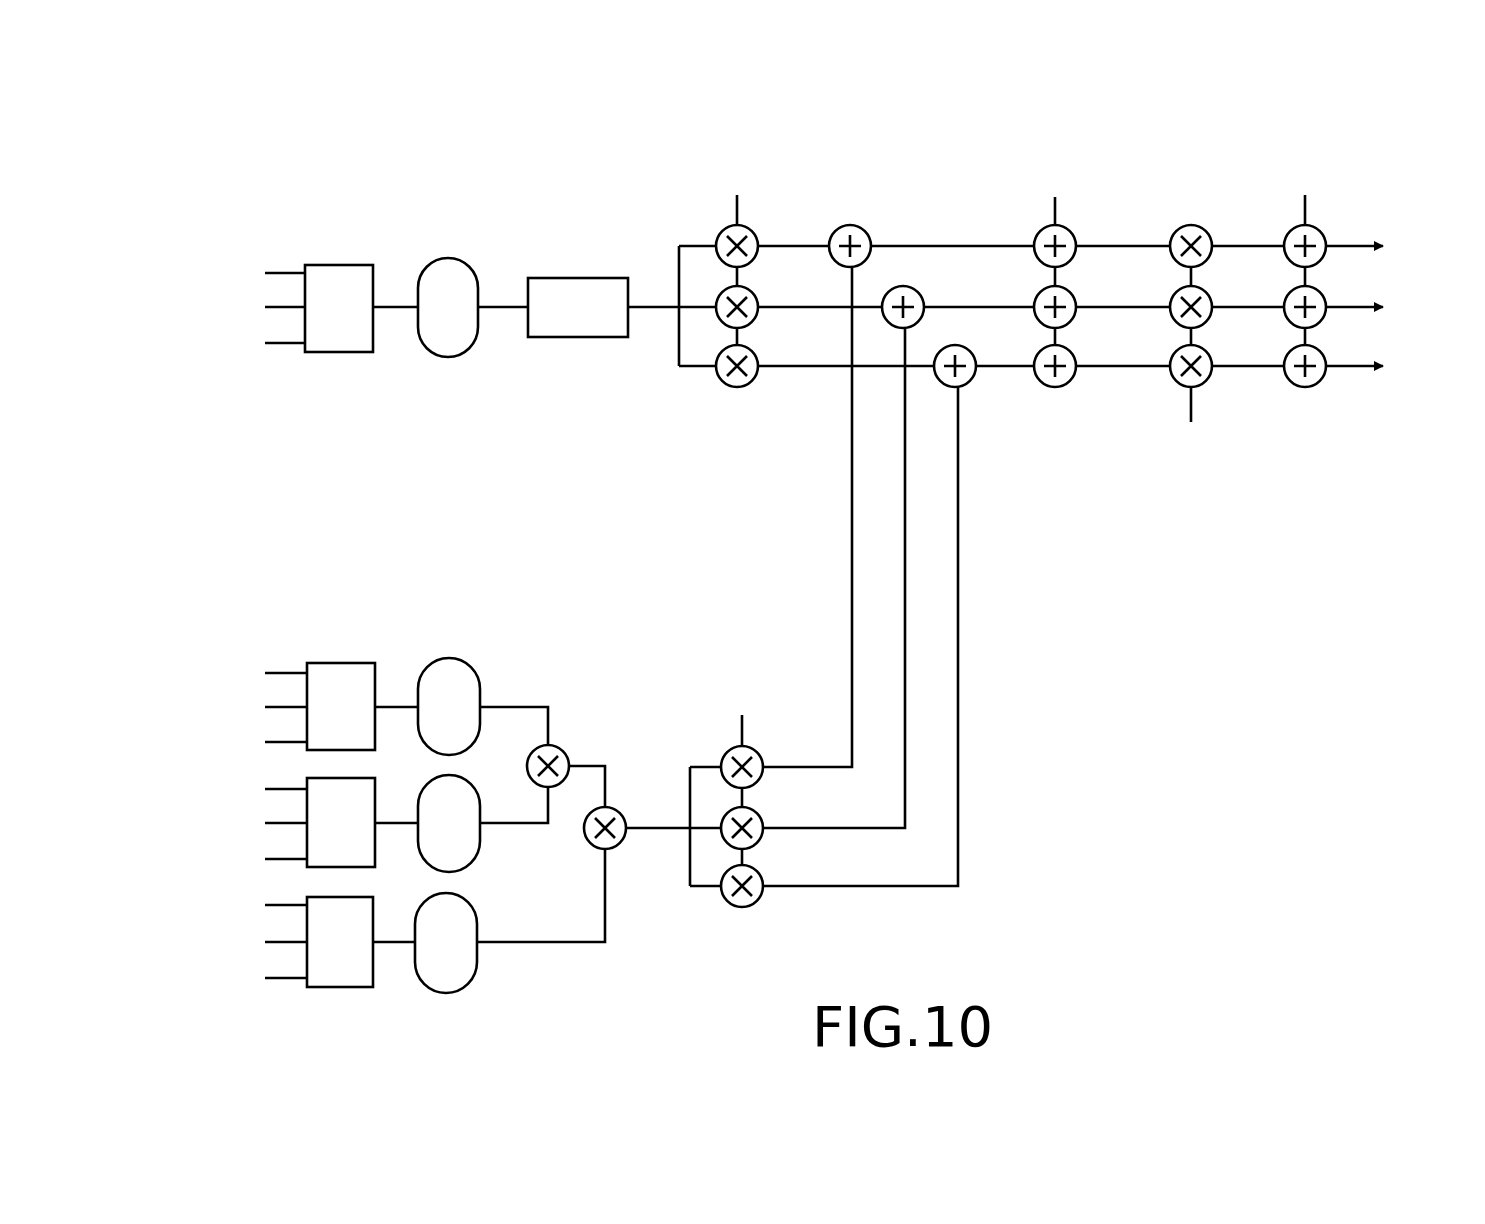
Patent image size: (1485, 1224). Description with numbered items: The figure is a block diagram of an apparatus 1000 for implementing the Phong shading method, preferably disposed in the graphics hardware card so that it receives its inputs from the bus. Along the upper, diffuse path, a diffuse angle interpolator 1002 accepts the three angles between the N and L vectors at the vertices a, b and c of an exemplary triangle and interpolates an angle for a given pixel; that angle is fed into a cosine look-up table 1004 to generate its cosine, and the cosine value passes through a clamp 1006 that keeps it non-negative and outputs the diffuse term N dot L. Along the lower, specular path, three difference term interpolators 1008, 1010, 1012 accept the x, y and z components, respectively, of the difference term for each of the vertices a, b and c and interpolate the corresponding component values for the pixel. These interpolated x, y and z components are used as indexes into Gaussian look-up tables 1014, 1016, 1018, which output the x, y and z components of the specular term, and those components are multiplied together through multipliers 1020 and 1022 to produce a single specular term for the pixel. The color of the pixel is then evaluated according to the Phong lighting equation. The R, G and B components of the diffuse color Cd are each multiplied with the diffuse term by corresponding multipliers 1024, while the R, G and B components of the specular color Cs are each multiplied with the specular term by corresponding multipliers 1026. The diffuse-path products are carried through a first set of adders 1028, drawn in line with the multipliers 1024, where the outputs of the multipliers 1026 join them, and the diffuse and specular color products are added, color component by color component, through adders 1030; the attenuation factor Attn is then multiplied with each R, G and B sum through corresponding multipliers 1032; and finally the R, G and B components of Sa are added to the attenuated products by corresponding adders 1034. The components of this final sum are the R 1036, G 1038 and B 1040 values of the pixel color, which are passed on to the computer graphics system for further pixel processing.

The apparatus 1000 is at (215, 190).
The diffuse angle interpolator 1002 is at (340, 352).
The cosine look-up table 1004 is at (452, 357).
The clamp 1006 is at (565, 337).
The difference term interpolator 1008 is at (375, 665).
The difference term interpolator 1010 is at (358, 778).
The difference term interpolator 1012 is at (355, 897).
The Gaussian look-up table 1014 is at (470, 668).
The Gaussian look-up table 1016 is at (455, 777).
The Gaussian look-up table 1018 is at (470, 907).
The multiplier 1020 is at (563, 752).
The multiplier 1022 is at (597, 848).
The multipliers 1024 is at (772, 331).
The multipliers 1026 is at (775, 851).
The adders 1028 is at (945, 330).
The adders 1030 is at (1088, 392).
The multipliers 1032 is at (1226, 392).
The adders 1034 is at (1335, 392).
The R 1036 is at (1405, 246).
The G 1038 is at (1405, 307).
The B 1040 is at (1405, 366).